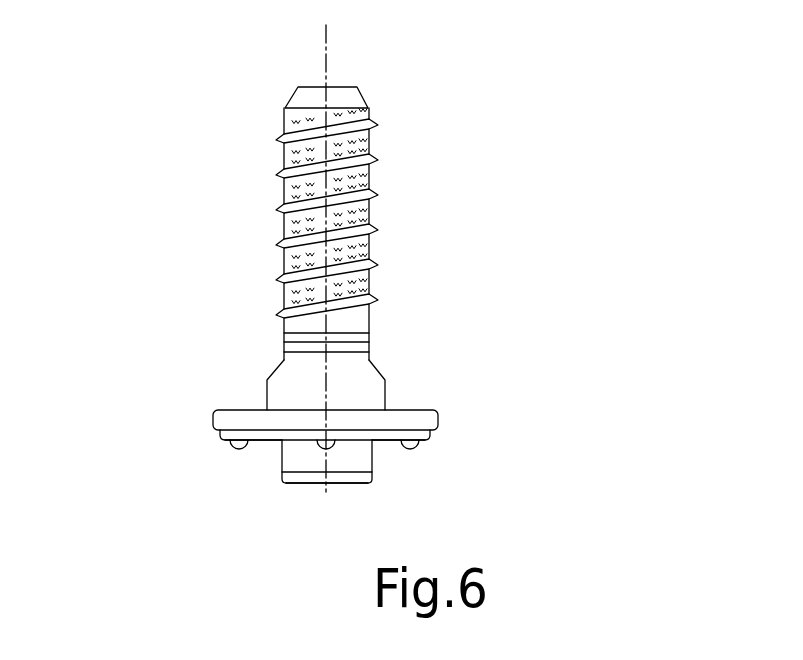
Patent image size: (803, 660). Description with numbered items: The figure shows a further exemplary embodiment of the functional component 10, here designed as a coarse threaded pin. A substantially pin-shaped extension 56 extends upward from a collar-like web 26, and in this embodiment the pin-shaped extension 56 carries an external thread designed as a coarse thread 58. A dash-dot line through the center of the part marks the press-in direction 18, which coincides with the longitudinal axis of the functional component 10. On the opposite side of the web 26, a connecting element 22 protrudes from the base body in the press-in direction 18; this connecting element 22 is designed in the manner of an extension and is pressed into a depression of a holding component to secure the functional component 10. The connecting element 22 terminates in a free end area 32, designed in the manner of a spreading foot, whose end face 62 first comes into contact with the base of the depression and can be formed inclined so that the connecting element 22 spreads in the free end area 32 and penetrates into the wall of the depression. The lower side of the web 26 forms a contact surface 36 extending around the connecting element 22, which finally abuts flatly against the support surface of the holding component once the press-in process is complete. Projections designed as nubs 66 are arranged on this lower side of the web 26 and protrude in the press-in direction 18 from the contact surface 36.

The functional component 10 is at (138, 66).
The press-in direction 18 is at (328, 45).
The connecting element 22 is at (368, 466).
The collar-like web 26 is at (212, 427).
The free end area 32 is at (302, 478).
The contact surface 36 is at (256, 441).
The pin-shaped extension 56 is at (300, 122).
The coarse thread 58 is at (370, 162).
The end face 62 is at (318, 485).
The nubs 66 is at (235, 449).